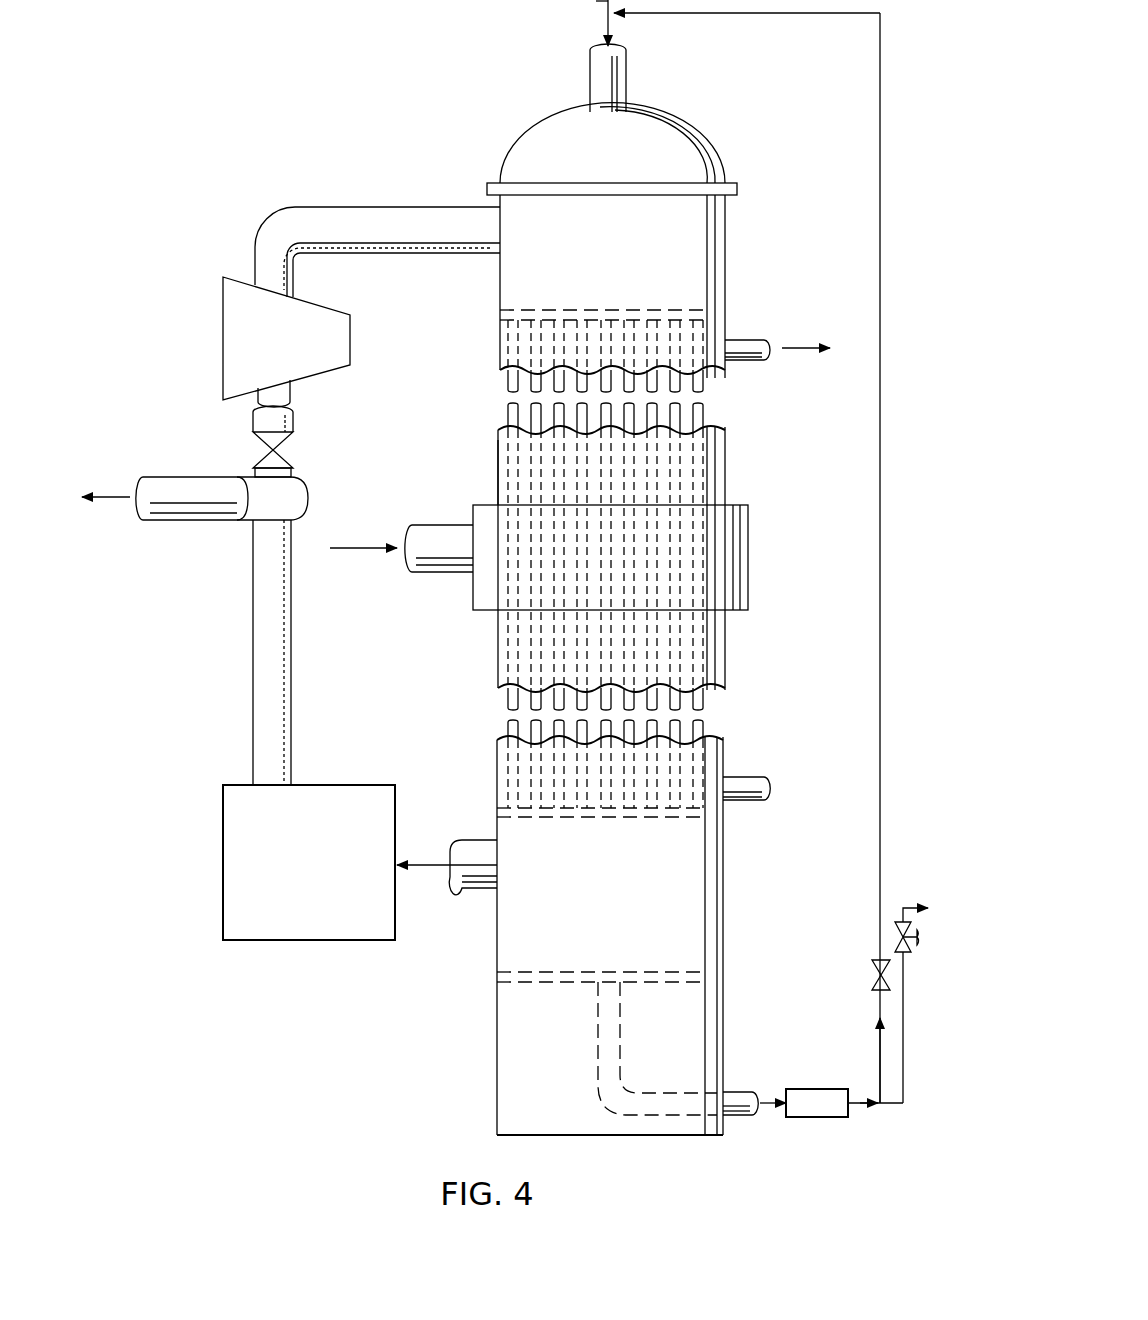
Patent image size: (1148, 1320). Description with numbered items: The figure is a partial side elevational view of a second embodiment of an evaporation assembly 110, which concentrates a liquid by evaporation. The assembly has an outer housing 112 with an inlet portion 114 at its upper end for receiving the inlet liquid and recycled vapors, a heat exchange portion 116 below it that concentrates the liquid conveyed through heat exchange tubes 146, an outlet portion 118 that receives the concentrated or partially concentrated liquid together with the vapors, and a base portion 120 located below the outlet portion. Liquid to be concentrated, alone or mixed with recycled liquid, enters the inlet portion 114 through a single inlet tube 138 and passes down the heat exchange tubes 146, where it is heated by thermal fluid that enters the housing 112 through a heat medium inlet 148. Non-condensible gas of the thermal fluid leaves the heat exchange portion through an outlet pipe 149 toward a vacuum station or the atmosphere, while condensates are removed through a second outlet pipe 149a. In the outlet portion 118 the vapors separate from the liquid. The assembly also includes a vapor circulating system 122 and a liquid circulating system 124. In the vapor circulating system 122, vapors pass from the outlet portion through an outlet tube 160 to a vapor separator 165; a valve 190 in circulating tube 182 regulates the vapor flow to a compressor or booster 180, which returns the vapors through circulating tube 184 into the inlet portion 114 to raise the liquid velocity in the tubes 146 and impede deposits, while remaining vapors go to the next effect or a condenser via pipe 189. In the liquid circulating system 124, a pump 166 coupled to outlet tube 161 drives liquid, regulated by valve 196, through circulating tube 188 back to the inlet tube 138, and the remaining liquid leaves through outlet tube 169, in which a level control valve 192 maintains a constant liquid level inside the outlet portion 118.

The evaporation assembly 110 is at (375, 146).
The outer housing 112 is at (498, 470).
The inlet portion 114 is at (738, 246).
The heat exchange portion 116 is at (738, 457).
The outlet portion 118 is at (737, 891).
The base portion 120 is at (737, 1012).
The vapor circulating system 122 is at (362, 384).
The liquid circulating system 124 is at (818, 1152).
The inlet tube 138 is at (628, 72).
The heat exchange tubes 146 is at (497, 388).
The heat medium inlet 148 is at (447, 524).
The outlet pipe 149 is at (752, 338).
The outlet pipe 149a is at (754, 775).
The outlet tube 160 is at (474, 840).
The outlet tube 161 is at (752, 1090).
The vapor separator 165 is at (334, 782).
The pump 166 is at (820, 1120).
The outlet tube 169 is at (903, 1062).
The booster 180 is at (232, 276).
The circulating tube 182 is at (292, 626).
The circulating tube 184 is at (379, 255).
The circulating tube 188 is at (878, 630).
The pipe 189 is at (172, 477).
The valve 190 is at (292, 450).
The level control valve 192 is at (922, 948).
The valve 196 is at (868, 978).